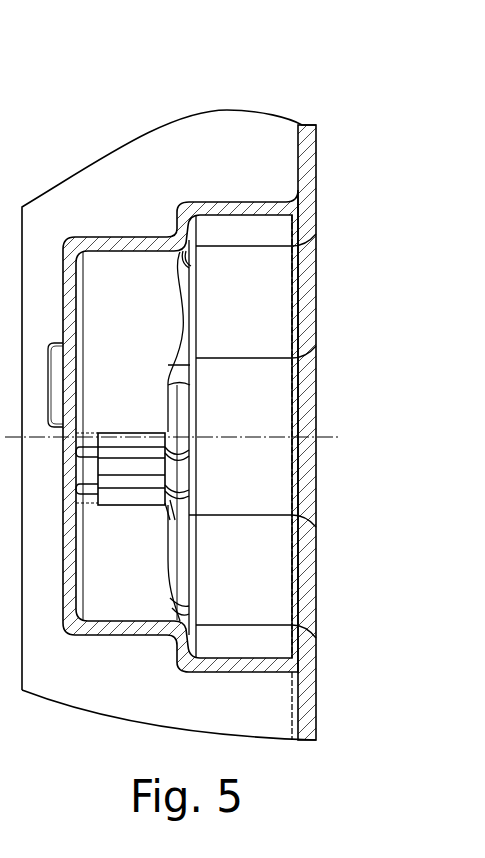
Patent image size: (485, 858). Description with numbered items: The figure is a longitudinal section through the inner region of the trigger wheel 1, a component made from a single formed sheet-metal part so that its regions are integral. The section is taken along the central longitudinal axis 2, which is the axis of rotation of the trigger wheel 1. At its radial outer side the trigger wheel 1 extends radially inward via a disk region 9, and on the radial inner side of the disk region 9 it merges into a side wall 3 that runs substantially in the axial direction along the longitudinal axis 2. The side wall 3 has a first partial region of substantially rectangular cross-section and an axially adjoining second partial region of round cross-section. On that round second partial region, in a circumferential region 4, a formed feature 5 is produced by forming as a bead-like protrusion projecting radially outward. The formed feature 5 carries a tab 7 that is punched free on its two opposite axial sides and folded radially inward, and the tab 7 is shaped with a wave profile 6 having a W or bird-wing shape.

The trigger wheel 1 is at (323, 98).
The central longitudinal axis 2 is at (333, 437).
The side wall 3 is at (126, 246).
The circumferential region 4 is at (176, 429).
The formed feature 5 is at (173, 472).
The wave profile 6 is at (120, 508).
The tab 7 is at (130, 468).
The disk region 9 is at (305, 147).